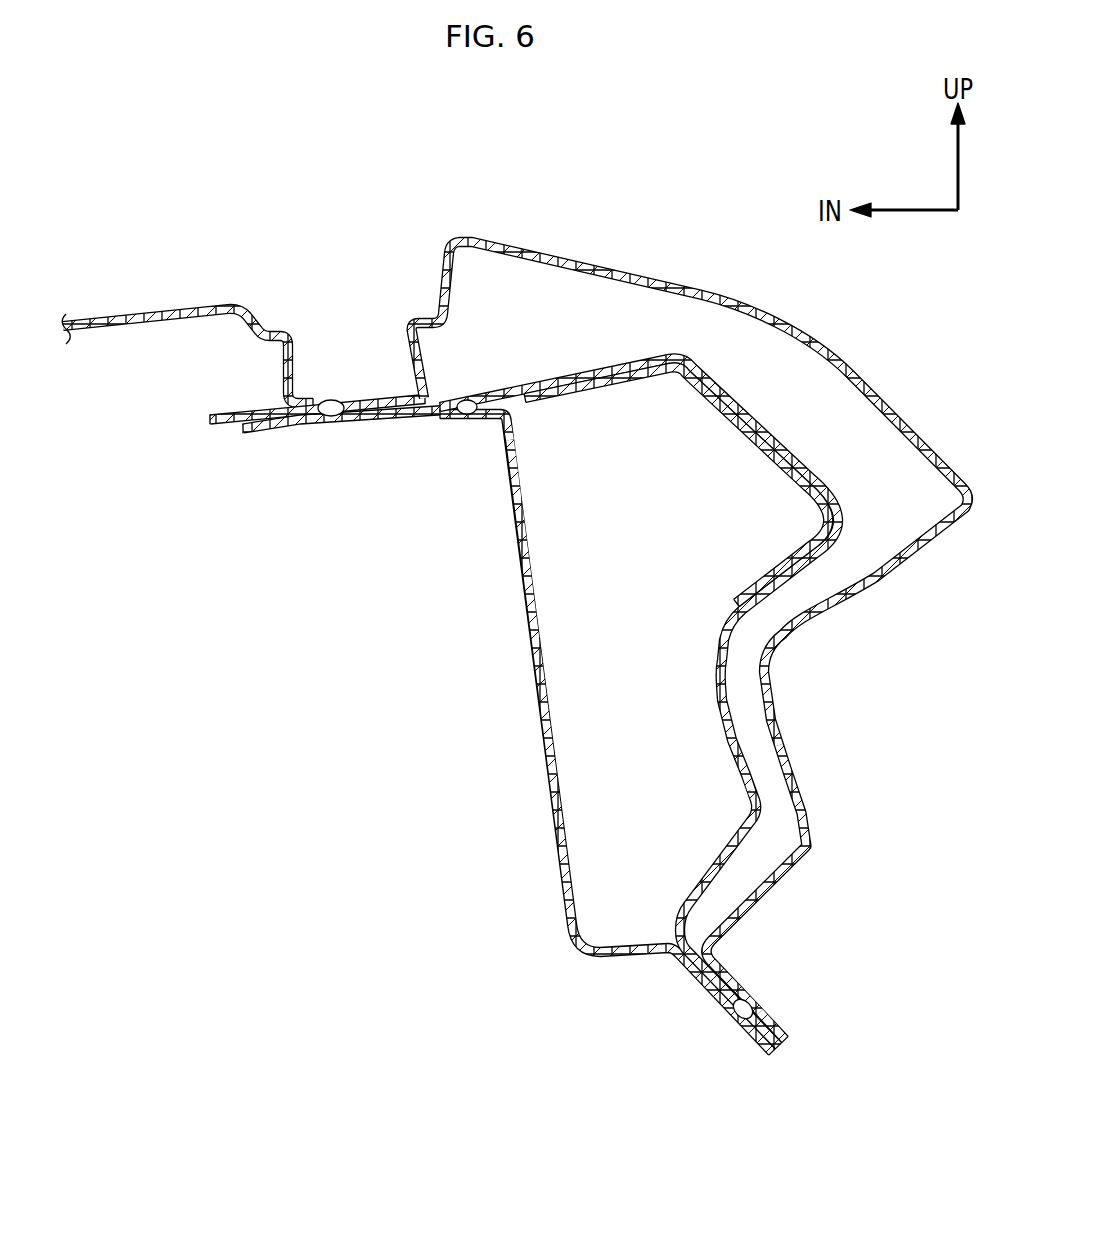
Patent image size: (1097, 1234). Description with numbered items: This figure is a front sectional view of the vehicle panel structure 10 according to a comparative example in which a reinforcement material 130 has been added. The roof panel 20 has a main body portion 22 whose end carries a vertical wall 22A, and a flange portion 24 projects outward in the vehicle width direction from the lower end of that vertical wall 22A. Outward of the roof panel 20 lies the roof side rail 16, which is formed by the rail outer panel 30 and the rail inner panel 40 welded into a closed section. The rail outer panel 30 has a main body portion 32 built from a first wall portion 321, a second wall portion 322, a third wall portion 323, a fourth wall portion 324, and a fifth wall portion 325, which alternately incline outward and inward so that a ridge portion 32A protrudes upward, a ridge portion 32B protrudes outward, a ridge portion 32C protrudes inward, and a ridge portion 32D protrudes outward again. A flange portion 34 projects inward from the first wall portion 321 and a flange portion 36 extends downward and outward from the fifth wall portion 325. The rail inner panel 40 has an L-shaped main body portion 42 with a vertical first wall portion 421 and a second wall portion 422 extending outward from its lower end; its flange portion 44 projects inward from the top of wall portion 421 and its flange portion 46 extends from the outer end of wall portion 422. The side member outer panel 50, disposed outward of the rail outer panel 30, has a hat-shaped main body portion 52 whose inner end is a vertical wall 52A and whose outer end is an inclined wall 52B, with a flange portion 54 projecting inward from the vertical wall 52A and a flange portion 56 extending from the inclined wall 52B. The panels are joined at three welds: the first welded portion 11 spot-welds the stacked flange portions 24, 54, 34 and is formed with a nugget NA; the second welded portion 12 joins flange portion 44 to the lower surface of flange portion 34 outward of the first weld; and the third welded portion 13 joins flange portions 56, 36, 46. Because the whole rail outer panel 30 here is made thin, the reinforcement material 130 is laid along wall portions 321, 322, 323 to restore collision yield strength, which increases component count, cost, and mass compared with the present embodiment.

The vehicle panel structure 10 is at (76, 162).
The first welded portion 11 is at (332, 426).
The second welded portion 12 is at (458, 426).
The third welded portion 13 is at (739, 1044).
The roof side rail 16 is at (448, 810).
The roof panel 20 is at (92, 318).
The main body portion 22 is at (137, 306).
The vertical wall 22A is at (283, 364).
The flange portion 24 is at (312, 397).
The rail outer panel 30 is at (682, 882).
The main body portion 32 is at (595, 443).
The first wall portion 321 is at (623, 390).
The ridge portion 32A is at (688, 366).
The second wall portion 322 is at (778, 450).
The ridge portion 32B is at (826, 510).
The third wall portion 323 is at (736, 594).
The ridge portion 32C is at (716, 656).
The fourth wall portion 324 is at (718, 718).
The ridge portion 32D is at (740, 812).
The fifth wall portion 325 is at (684, 870).
The flange portion 34 is at (360, 427).
The flange portion 36 is at (688, 980).
The rail inner panel 40 is at (550, 813).
The main body portion 42 is at (448, 910).
The first wall portion 421 is at (562, 912).
The second wall portion 422 is at (628, 958).
The flange portion 44 is at (484, 420).
The flange portion 46 is at (714, 1029).
The side member outer panel 50 is at (850, 358).
The main body portion 52 is at (778, 317).
The vertical wall 52A is at (414, 355).
The inclined wall 52B is at (770, 880).
The flange portion 54 is at (372, 398).
The flange portion 56 is at (786, 1022).
The reinforcement material 130 is at (574, 396).
The nugget NA is at (468, 400).